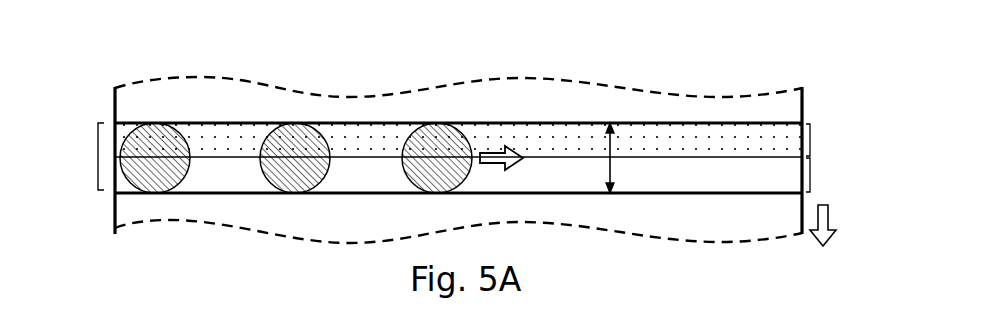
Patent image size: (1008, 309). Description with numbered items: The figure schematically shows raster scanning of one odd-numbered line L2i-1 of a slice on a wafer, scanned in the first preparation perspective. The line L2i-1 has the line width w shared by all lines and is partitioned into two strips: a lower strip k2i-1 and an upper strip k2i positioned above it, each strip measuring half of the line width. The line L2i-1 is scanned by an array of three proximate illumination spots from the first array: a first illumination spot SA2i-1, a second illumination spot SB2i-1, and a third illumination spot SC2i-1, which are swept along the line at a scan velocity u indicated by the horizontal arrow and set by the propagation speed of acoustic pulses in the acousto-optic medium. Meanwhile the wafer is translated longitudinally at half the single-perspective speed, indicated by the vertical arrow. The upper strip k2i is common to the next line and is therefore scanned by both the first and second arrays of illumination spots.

The first illumination spot SA2i-1 is at (155, 123).
The second illumination spot SB2i-1 is at (295, 123).
The third illumination spot SC2i-1 is at (437, 123).
The scan velocity u is at (498, 172).
The line width w is at (612, 162).
The line L2i-1 is at (98, 157).
The strip k2i is at (833, 139).
The strip k2i-1 is at (843, 175).